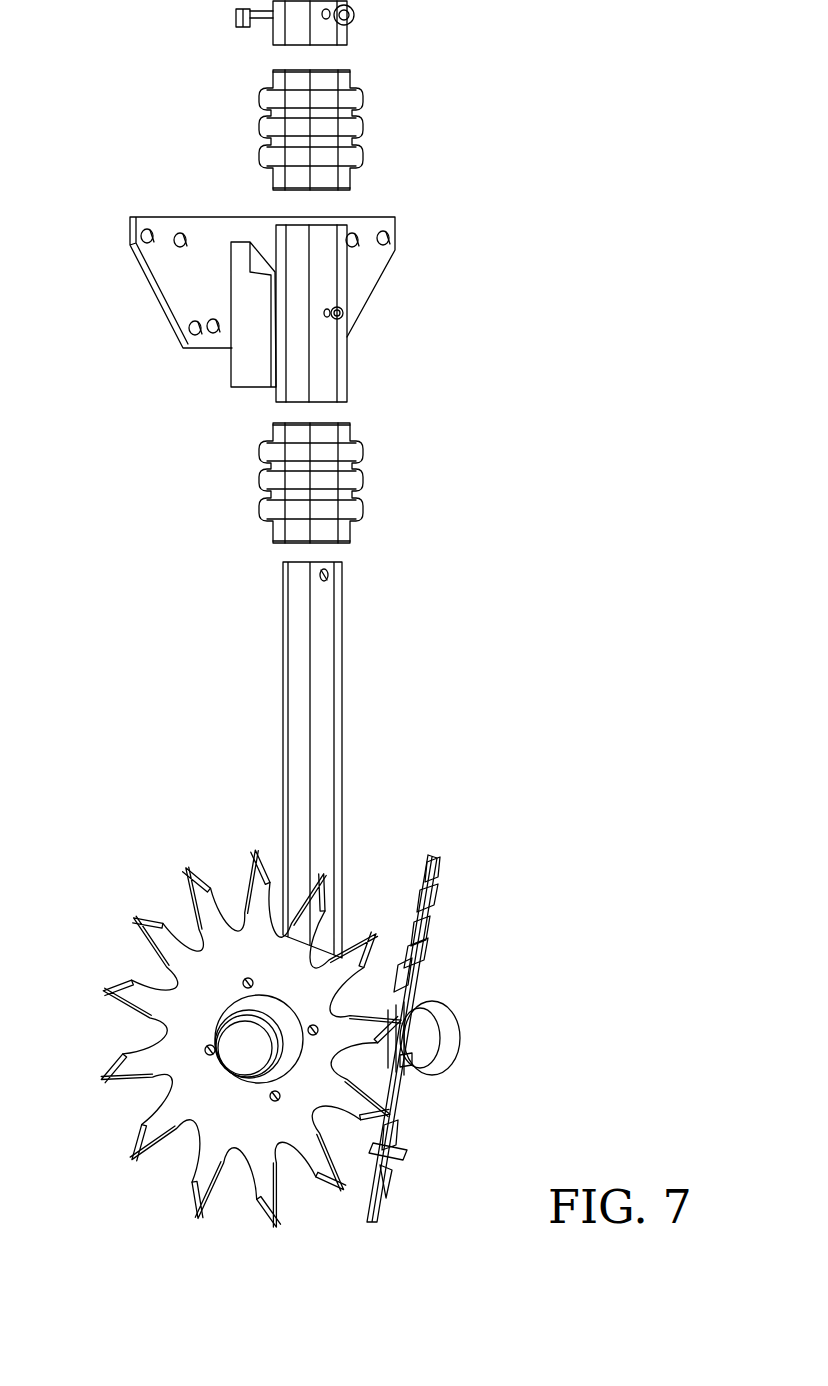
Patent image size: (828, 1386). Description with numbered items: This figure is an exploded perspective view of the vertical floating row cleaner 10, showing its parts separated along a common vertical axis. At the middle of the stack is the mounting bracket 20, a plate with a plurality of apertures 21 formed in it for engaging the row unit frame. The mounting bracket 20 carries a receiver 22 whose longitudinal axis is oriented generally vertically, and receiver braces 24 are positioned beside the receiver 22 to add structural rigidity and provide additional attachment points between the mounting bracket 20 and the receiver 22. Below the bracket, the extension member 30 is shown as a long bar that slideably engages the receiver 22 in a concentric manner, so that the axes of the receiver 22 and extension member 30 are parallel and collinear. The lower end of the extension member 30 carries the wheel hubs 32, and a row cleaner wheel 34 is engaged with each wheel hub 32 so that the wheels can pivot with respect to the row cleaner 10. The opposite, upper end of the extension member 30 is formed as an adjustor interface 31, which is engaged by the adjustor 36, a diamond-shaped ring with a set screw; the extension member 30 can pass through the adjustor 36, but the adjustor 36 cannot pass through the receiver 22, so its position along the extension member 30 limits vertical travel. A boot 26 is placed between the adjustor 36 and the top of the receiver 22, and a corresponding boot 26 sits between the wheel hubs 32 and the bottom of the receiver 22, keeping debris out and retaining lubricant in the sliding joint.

The vertical floating row cleaner 10 is at (630, 277).
The mounting bracket 20 is at (114, 320).
The apertures 21 is at (147, 229).
The receiver 22 is at (323, 352).
The receiver braces 24 is at (243, 363).
The boot 26 is at (262, 124).
The extension member 30 is at (536, 865).
The adjustor interface 31 is at (320, 579).
The wheel hub 32 is at (240, 1040).
The row cleaner wheel 34 is at (203, 980).
The adjustor 36 is at (348, 33).